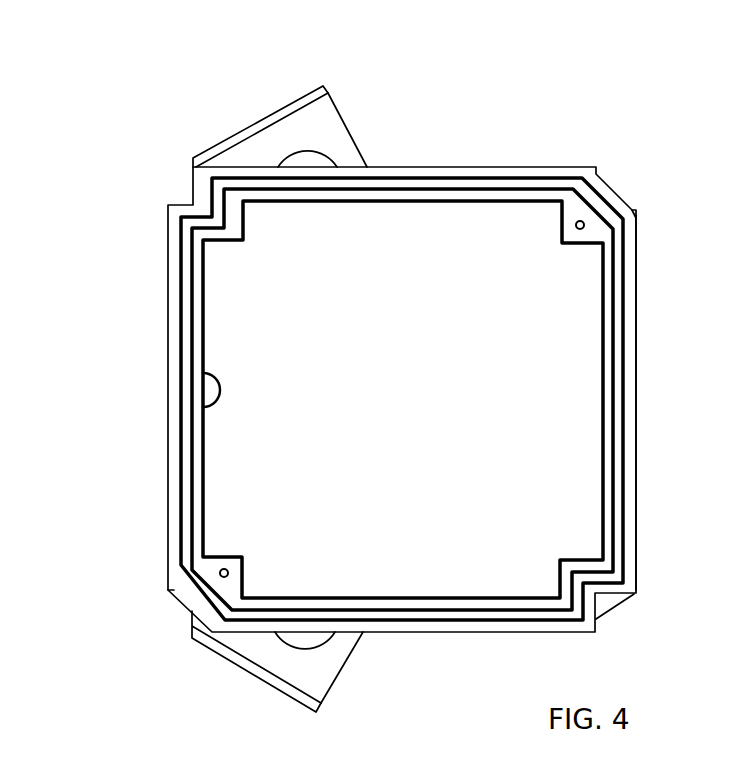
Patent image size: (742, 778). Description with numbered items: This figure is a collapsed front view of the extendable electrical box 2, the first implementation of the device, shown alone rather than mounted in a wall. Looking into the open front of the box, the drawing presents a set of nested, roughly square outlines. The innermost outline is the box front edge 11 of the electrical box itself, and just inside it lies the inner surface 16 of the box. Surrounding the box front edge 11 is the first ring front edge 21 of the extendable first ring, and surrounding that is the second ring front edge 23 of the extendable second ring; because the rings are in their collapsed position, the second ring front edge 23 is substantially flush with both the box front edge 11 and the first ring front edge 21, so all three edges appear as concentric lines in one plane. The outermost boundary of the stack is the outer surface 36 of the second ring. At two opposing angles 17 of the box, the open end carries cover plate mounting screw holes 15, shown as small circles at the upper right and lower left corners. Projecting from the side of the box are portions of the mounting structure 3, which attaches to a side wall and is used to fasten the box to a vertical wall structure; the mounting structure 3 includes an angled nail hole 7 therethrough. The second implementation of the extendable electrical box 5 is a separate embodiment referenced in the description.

The extendable electrical box 2 is at (113, 158).
The mounting structure 3 is at (277, 140).
The extendable electrical box 5 is at (322, 708).
The angled nail hole 7 is at (323, 92).
The box front edge 11 is at (538, 198).
The cover plate mounting screw holes 15 is at (584, 222).
The opposing angles 17 is at (625, 210).
The inner surface 16 is at (203, 407).
The first ring front edge 21 is at (492, 187).
The second ring front edge 23 is at (455, 173).
The outer surface 36 is at (637, 365).